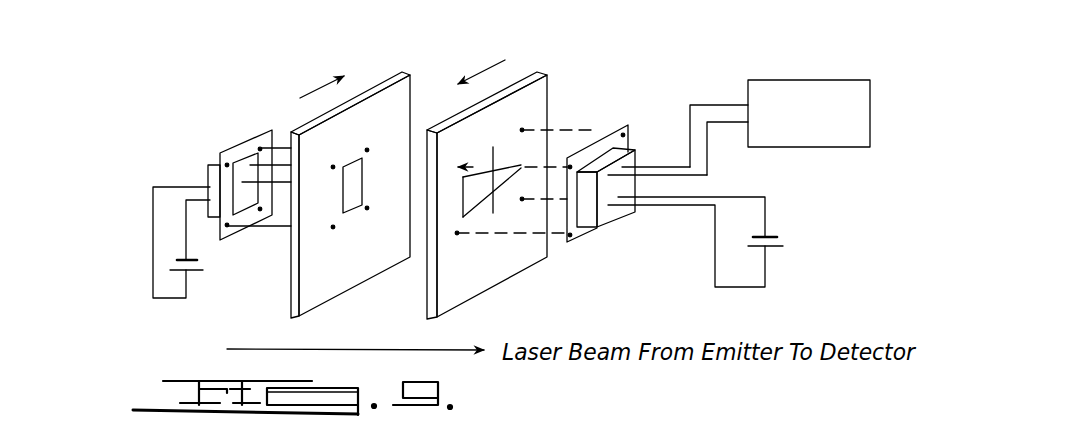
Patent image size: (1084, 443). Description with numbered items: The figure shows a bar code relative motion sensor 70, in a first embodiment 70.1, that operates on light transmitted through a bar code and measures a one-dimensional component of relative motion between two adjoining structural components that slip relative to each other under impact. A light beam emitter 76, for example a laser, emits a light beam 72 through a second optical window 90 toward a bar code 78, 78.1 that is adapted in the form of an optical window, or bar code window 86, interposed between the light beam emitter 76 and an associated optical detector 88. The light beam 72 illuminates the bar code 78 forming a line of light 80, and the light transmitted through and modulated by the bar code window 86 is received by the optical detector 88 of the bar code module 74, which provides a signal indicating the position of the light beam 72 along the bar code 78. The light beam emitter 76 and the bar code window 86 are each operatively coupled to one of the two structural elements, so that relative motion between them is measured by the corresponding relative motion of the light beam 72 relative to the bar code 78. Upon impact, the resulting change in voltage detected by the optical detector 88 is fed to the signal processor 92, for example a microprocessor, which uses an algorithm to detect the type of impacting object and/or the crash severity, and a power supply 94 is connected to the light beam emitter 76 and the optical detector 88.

The bar code relative motion sensor 70 is at (545, 165).
The first bar code relative motion sensor 70.1 is at (749, 54).
The light beam 72 is at (275, 183).
The bar code module 74 is at (609, 116).
The light beam emitter 76 is at (216, 165).
The bar code 78 is at (558, 116).
The bar code 78.1 is at (558, 116).
The line of light 80 is at (492, 180).
The bar code window 86 is at (506, 167).
The optical detector 88 is at (598, 230).
The second optical window 90 is at (353, 203).
The signal processor 92 is at (871, 100).
The power supply 94 is at (141, 287).